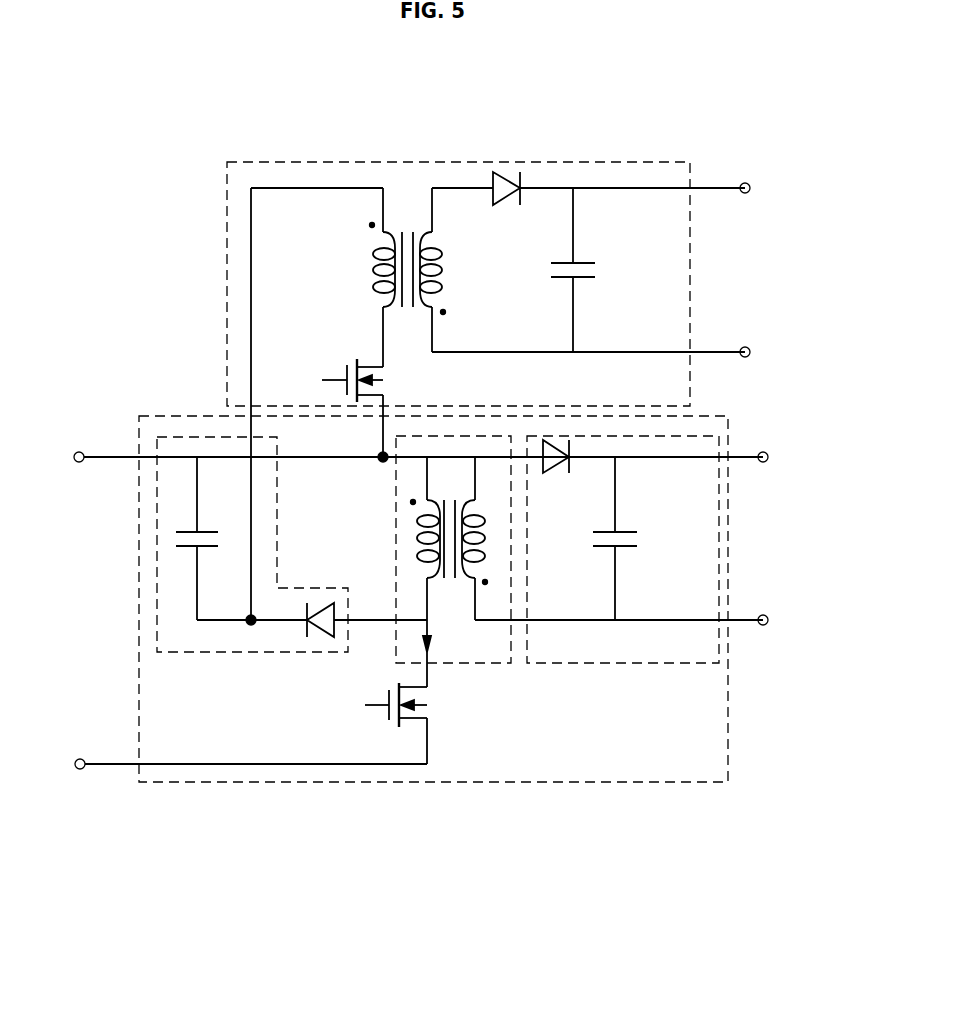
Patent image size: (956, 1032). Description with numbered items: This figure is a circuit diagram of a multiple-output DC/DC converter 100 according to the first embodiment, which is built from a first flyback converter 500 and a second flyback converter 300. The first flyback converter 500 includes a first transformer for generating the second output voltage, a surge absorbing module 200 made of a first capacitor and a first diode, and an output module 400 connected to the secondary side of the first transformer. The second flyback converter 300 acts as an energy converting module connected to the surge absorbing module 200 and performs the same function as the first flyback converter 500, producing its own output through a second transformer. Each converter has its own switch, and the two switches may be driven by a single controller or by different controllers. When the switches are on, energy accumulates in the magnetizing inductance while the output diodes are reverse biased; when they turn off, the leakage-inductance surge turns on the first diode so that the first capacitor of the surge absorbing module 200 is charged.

The multiple-output DC/DC converter 100 is at (117, 95).
The surge absorbing module 200 is at (252, 656).
The second flyback converter 300 is at (465, 160).
The output module 400 is at (622, 665).
The first flyback converter 500 is at (445, 784).